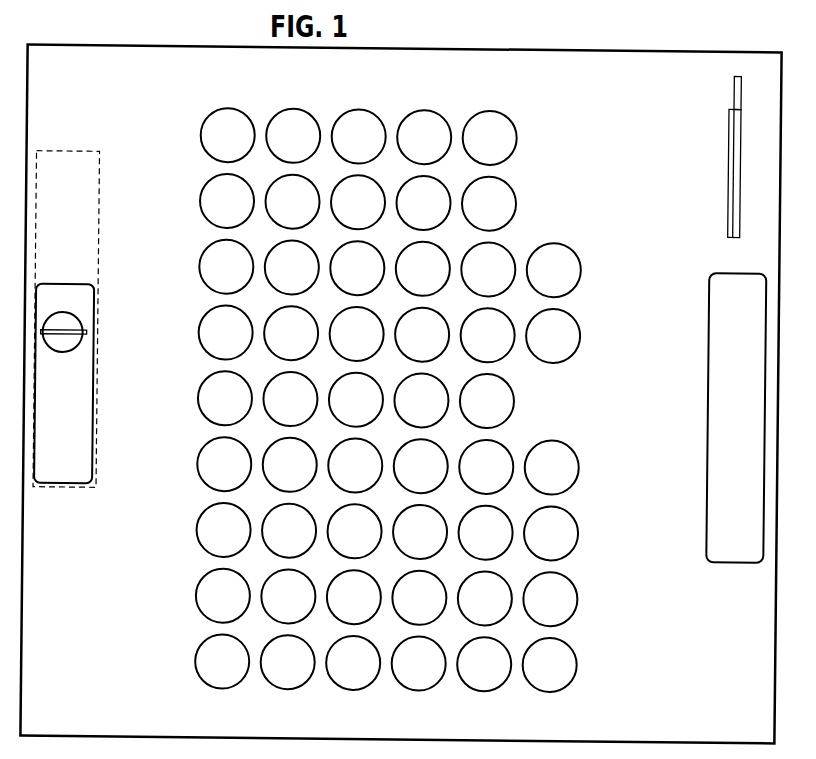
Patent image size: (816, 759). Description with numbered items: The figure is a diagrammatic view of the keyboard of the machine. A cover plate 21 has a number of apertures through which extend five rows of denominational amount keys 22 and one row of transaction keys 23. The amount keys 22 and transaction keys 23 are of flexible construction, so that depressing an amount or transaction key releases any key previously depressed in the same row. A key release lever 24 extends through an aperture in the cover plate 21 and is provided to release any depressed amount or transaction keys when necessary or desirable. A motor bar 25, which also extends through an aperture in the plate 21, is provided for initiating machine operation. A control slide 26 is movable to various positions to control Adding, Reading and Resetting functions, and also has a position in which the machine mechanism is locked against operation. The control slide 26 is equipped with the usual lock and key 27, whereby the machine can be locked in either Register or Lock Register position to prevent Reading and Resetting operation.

The cover plate 21 is at (161, 62).
The denominational amount keys 22 is at (221, 678).
The transaction keys 23 is at (555, 687).
The key release lever 24 is at (731, 99).
The motor bar 25 is at (715, 350).
The control slide 26 is at (88, 415).
The lock and key 27 is at (79, 328).